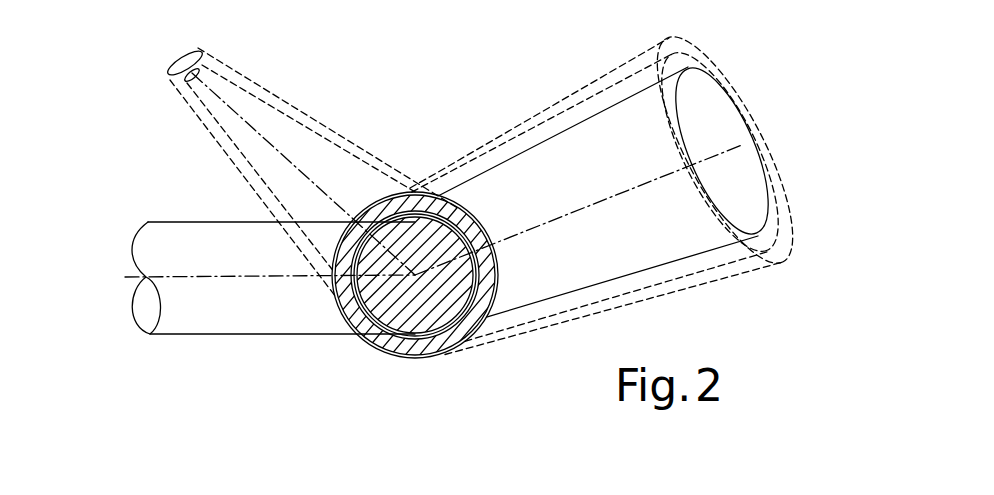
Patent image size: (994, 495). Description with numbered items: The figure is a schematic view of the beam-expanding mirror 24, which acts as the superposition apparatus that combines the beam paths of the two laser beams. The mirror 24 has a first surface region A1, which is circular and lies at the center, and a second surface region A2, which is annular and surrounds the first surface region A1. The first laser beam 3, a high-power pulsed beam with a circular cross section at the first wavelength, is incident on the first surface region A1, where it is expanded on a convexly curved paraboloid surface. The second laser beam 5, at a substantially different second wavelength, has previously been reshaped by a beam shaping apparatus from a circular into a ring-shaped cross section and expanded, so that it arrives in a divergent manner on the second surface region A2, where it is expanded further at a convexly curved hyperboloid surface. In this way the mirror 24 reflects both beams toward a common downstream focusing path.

The first laser beam 3 is at (203, 316).
The second laser beam 5 is at (308, 128).
The beam-expanding mirror 24 is at (441, 375).
The first surface region A1 is at (392, 334).
The second surface region A2 is at (355, 338).